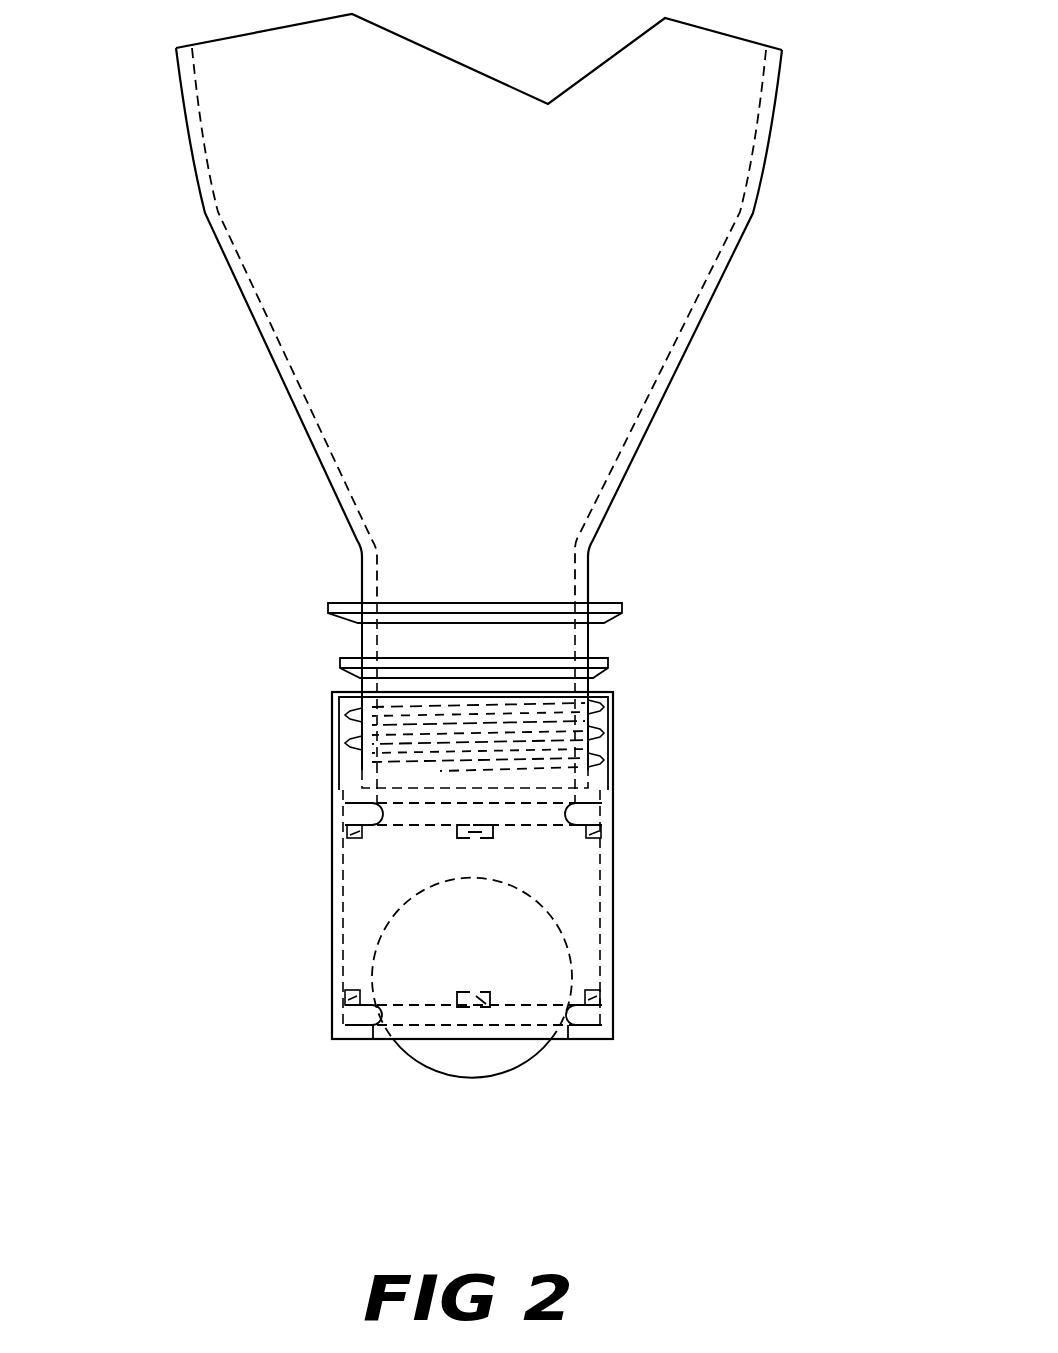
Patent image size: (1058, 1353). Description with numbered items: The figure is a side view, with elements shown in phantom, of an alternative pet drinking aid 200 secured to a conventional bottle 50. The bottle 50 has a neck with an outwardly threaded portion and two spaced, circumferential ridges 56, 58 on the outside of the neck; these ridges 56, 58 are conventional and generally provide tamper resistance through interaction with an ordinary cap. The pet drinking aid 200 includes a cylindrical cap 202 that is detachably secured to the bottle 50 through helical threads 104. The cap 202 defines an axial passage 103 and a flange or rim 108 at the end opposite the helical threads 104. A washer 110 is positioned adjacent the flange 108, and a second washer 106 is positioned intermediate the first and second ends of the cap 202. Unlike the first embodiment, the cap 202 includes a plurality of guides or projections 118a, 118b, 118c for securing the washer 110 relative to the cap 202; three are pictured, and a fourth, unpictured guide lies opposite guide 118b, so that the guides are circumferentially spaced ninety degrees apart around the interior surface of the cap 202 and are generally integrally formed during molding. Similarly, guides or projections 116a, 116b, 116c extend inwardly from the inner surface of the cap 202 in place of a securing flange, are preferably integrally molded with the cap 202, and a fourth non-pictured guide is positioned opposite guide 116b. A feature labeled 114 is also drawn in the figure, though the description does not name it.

The bottle 50 is at (693, 351).
The circumferential ridge 56 is at (622, 607).
The circumferential ridge 58 is at (607, 662).
The helical threads 104 is at (614, 727).
The pet drinking aid 200 is at (302, 777).
The cylindrical cap 202 is at (332, 808).
The second washer 106 is at (613, 808).
The axial passage 103 is at (390, 876).
The guide or projection 116a is at (382, 840).
The guide or projection 116b is at (497, 837).
The guide or projection 116c is at (590, 832).
The aperture 114 is at (510, 937).
The washer 110 is at (613, 1018).
The guide or projection 118a is at (333, 990).
The guide or projection 118b is at (478, 998).
The guide or projection 118c is at (601, 997).
The flange or rim 108 is at (582, 1040).